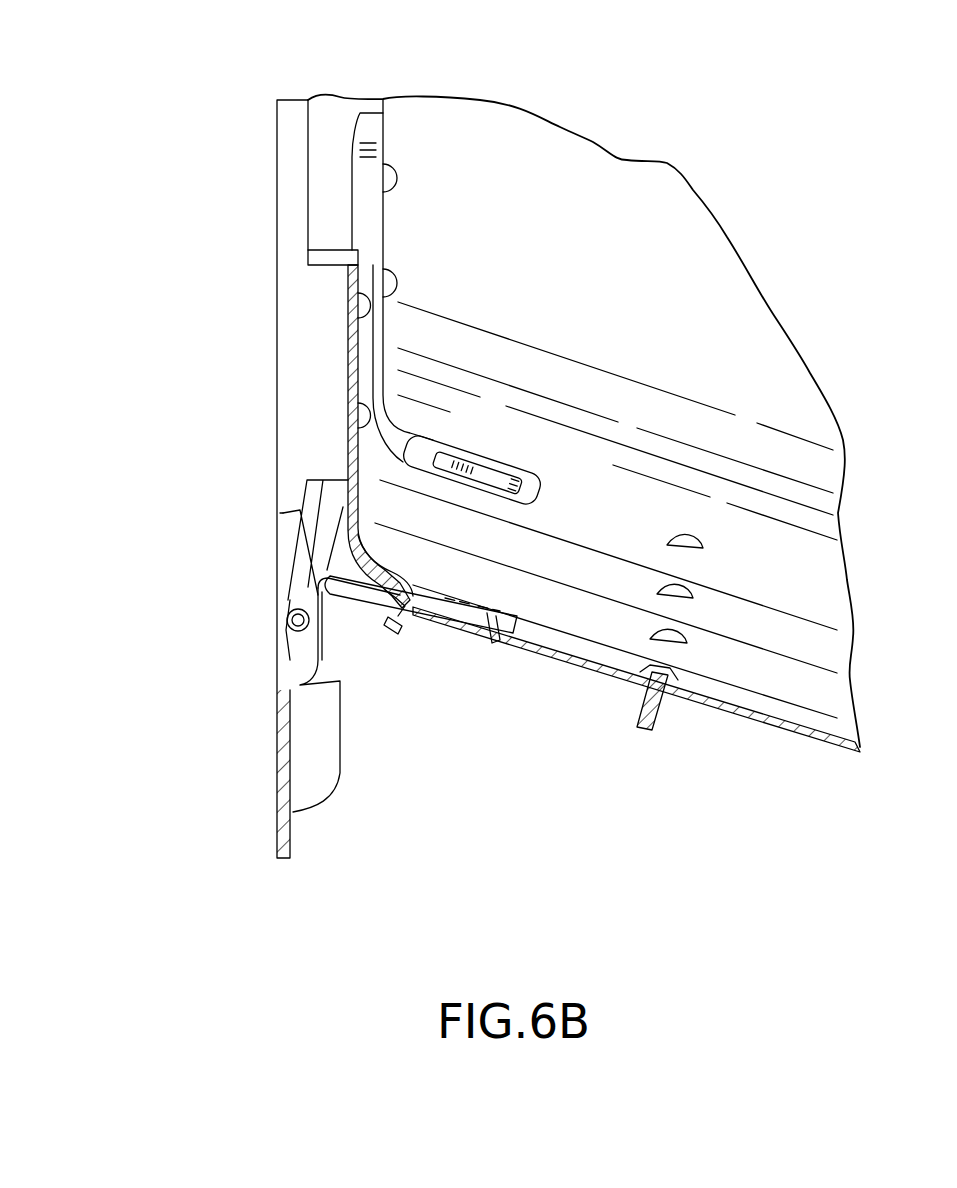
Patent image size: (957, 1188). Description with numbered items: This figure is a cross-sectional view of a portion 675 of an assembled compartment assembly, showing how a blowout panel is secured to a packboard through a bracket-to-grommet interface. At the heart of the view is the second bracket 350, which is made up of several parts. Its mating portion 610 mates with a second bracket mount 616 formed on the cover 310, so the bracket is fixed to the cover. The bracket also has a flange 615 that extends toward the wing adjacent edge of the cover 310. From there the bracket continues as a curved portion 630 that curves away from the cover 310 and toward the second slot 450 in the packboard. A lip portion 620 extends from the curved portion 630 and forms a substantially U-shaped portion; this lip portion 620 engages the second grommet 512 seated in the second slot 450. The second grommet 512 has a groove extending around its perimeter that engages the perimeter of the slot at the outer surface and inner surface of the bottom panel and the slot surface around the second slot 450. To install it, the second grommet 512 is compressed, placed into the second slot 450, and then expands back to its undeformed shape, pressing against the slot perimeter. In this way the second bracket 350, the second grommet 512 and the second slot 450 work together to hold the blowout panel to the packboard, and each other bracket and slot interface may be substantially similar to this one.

The portion of an assembled compartment assembly 675 is at (166, 151).
The cover 310 is at (293, 150).
The second bracket mount 616 is at (322, 299).
The mating portion 610 is at (347, 367).
The second bracket 350 is at (337, 469).
The flange 615 is at (347, 494).
The curved portion 630 is at (360, 587).
The lip portion 620 is at (407, 627).
The second slot 450 is at (477, 627).
The second grommet 512 is at (517, 622).